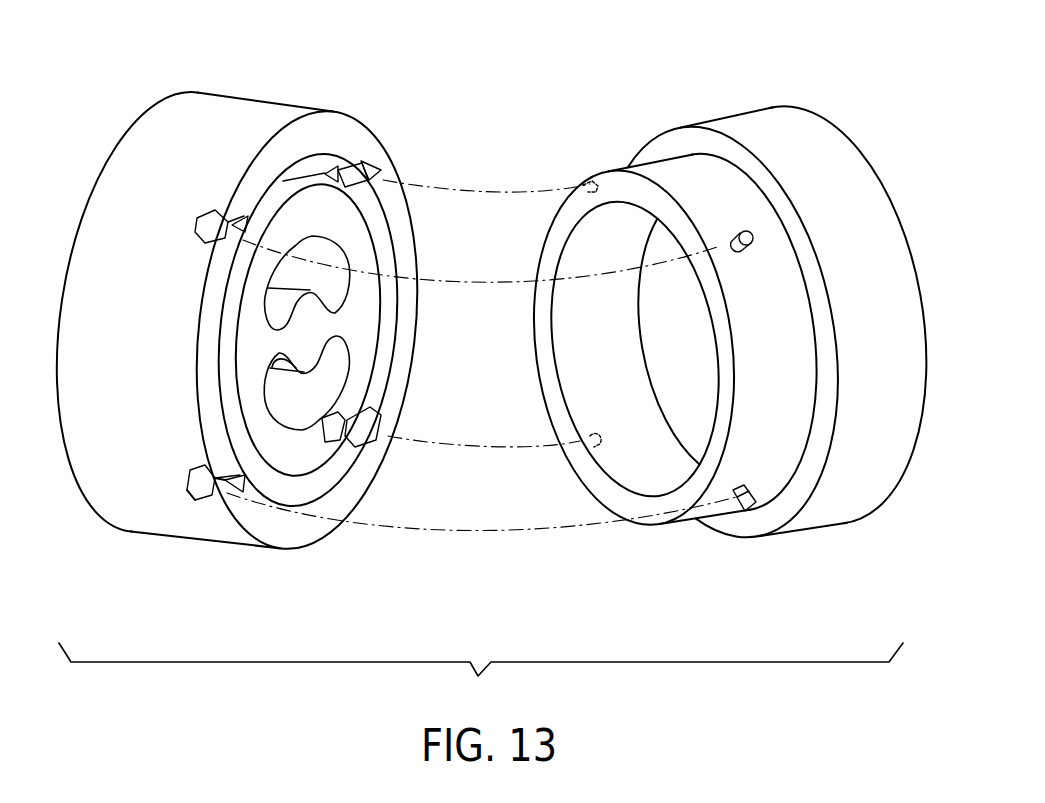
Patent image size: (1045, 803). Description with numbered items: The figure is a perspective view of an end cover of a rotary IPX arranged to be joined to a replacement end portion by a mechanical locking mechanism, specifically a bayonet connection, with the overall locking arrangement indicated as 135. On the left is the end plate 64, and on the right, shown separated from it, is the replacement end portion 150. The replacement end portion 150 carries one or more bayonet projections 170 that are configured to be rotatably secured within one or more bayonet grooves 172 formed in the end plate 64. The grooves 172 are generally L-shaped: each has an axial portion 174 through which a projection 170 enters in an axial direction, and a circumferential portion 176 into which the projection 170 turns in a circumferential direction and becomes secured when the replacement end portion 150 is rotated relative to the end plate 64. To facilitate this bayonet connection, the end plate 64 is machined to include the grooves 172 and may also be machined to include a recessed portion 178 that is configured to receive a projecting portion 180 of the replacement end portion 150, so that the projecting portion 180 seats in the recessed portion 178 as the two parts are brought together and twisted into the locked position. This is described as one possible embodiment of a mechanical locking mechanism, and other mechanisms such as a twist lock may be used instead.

The end plate 64 is at (257, 315).
The bayonet coupling assembly 135 is at (526, 578).
The replacement end portion 150 is at (719, 324).
The bayonet projections 170 is at (735, 236).
The bayonet grooves 172 is at (376, 171).
The axial portion 174 is at (226, 490).
The circumferential portion 176 is at (196, 486).
The recessed portion 178 is at (311, 173).
The projecting portion 180 is at (626, 184).